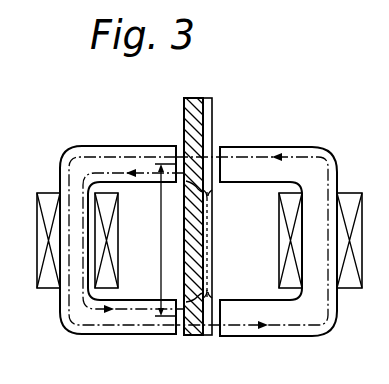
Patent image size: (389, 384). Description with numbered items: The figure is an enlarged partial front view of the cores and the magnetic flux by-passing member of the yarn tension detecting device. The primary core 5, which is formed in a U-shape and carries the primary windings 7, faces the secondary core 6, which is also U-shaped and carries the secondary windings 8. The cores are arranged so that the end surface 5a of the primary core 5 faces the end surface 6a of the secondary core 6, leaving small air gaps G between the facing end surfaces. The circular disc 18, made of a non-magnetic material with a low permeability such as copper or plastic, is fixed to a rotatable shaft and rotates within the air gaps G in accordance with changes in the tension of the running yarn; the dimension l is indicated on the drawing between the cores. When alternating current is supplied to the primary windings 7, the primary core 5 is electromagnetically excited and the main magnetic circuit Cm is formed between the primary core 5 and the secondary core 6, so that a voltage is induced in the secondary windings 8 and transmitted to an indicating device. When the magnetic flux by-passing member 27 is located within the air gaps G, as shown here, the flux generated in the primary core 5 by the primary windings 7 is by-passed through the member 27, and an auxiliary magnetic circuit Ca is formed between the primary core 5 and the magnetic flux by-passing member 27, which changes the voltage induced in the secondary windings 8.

The primary core 5 is at (92, 146).
The secondary core 6 is at (280, 147).
The end surface of the primary core 5a is at (174, 182).
The end surface of the secondary core 6a is at (221, 172).
The primary windings 7 is at (38, 239).
The secondary windings 8 is at (347, 288).
The circular disc 18 is at (198, 336).
The magnetic flux by-passing member 27 is at (208, 337).
The air gaps G is at (181, 145).
The distance l is at (163, 240).
The auxiliary magnetic circuit Ca is at (102, 310).
The main magnetic circuit Cm is at (164, 326).